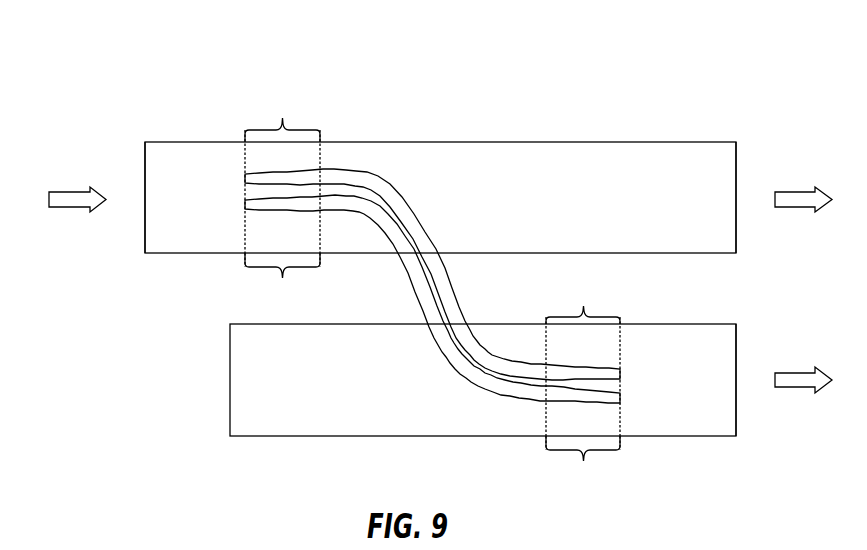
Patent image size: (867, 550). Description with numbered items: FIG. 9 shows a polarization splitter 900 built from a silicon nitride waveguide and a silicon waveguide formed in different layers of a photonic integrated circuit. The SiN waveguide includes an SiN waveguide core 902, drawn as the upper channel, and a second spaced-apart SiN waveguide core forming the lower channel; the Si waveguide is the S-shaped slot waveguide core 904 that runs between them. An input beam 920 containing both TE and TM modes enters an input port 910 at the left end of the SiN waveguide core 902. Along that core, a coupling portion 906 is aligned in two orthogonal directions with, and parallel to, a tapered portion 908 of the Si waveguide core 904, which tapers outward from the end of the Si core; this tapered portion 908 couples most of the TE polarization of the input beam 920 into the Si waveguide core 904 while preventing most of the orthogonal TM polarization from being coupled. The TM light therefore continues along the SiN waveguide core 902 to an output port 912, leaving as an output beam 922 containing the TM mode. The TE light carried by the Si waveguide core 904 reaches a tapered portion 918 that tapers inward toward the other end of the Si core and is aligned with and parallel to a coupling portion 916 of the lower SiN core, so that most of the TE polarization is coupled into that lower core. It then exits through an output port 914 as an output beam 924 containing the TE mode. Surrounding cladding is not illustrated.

The polarization splitter 900 is at (768, 56).
The SiN waveguide core 902 is at (546, 142).
The Si waveguide core 904 is at (392, 184).
The coupling portion 906 is at (282, 173).
The tapered portion 908 is at (282, 279).
The input port 910 is at (145, 213).
The output port 912 is at (738, 153).
The output port 914 is at (738, 424).
The coupling portion 916 is at (583, 460).
The tapered portion 918 is at (583, 358).
The input beam 920 is at (74, 207).
The output beam 922 is at (799, 207).
The output beam 924 is at (799, 388).